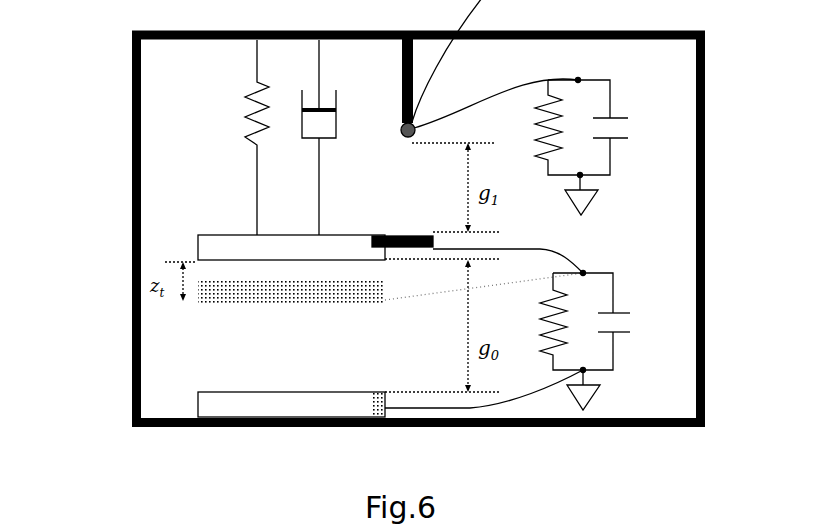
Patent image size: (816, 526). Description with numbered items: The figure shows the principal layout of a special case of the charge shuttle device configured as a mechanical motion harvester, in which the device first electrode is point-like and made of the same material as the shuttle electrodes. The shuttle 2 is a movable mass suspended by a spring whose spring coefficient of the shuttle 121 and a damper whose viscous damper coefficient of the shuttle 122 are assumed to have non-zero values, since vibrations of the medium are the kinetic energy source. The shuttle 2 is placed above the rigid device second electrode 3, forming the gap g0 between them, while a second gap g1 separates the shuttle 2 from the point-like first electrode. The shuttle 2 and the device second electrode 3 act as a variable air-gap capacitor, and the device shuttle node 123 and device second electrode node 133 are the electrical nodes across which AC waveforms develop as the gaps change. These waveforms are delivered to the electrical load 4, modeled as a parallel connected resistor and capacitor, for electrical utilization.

The shuttle 2 is at (190, 242).
The device second electrode 3 is at (195, 405).
The electrical load 4 is at (612, 165).
The spring coefficient of the shuttle 121 is at (245, 128).
The viscous damper coefficient of the shuttle 122 is at (318, 102).
The device shuttle node 123 is at (380, 248).
The device second electrode node 133 is at (497, 423).